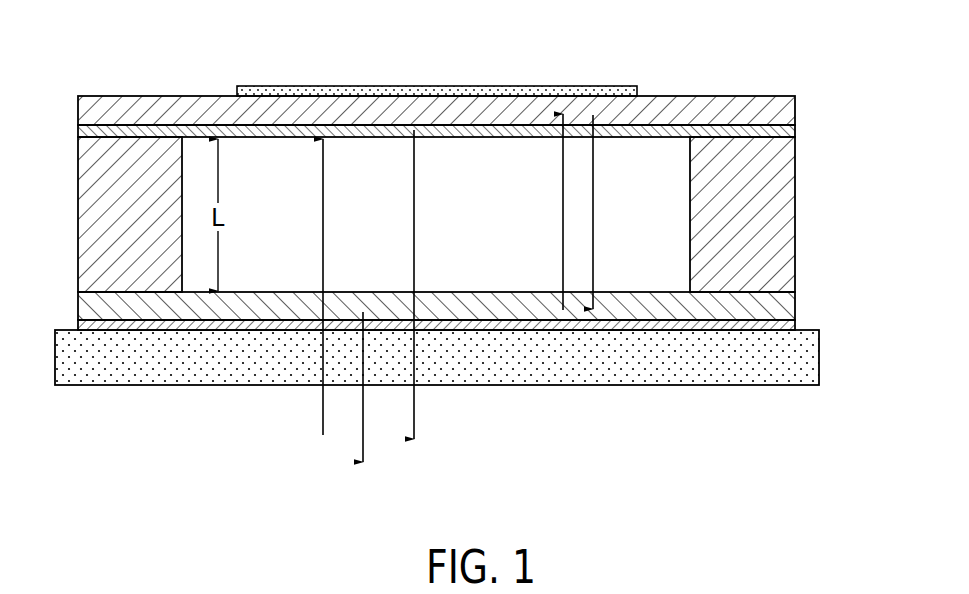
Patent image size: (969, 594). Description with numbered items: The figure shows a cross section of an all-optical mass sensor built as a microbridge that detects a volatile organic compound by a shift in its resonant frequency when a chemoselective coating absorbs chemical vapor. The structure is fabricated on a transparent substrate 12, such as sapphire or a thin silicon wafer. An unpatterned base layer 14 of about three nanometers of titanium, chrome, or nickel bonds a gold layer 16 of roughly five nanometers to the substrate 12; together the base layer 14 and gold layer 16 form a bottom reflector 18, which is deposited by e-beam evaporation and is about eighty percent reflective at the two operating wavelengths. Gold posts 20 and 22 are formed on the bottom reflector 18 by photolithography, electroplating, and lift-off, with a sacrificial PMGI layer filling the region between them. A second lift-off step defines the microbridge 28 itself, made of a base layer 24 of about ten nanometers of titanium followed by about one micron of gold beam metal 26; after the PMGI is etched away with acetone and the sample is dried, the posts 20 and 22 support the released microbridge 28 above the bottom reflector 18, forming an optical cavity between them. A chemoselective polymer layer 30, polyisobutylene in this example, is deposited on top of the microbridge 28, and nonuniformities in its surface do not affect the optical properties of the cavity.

The transparent substrate 12 is at (808, 362).
The base layer 14 is at (793, 327).
The gold layer 16 is at (787, 308).
The bottom reflector 18 is at (440, 301).
The gold post 20 is at (78, 215).
The gold post 22 is at (788, 197).
The base layer 24 is at (790, 133).
The gold beam metal 26 is at (773, 96).
The microbridge 28 is at (440, 84).
The chemoselective polymer layer 30 is at (632, 86).